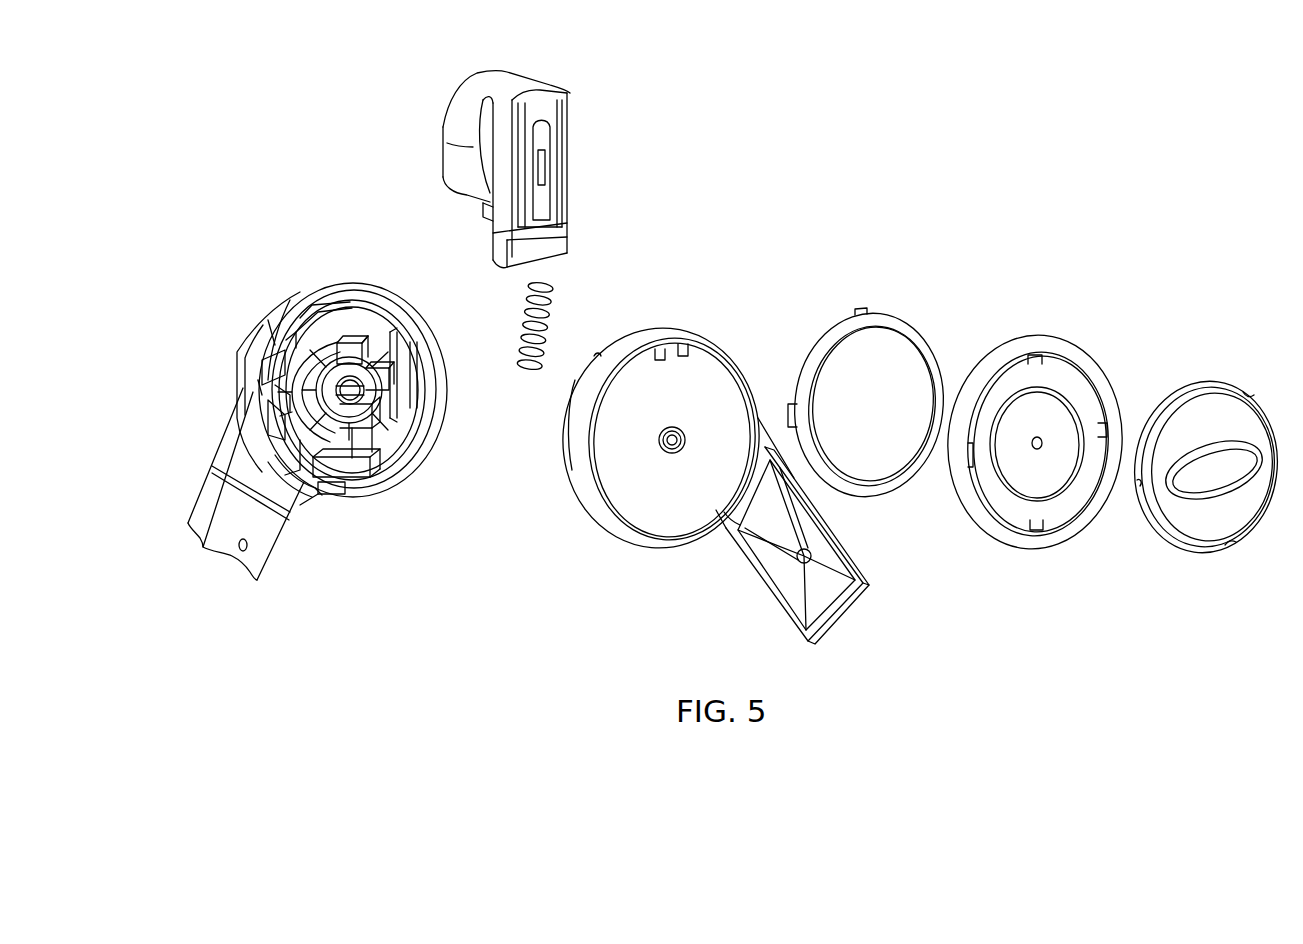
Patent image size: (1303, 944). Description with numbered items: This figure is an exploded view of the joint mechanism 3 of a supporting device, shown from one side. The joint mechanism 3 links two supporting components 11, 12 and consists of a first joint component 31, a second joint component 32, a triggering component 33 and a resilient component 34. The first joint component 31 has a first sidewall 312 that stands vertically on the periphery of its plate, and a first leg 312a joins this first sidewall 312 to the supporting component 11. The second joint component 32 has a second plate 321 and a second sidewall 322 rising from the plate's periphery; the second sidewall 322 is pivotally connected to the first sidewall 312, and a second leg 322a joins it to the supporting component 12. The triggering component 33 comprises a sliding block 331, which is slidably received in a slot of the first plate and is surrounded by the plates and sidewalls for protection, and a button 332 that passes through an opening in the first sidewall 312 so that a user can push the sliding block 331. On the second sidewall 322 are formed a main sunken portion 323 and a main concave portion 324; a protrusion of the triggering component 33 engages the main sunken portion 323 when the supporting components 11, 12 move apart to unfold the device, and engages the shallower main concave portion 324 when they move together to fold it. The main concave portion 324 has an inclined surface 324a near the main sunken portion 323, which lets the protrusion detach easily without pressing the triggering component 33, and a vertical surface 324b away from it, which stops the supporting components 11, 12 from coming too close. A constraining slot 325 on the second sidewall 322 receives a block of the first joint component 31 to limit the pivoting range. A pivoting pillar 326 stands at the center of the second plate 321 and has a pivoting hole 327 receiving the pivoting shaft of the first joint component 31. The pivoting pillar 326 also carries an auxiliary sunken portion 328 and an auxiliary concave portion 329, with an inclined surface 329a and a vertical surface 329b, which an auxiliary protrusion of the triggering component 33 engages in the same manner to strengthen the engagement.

The joint mechanism 3 is at (178, 58).
The supporting component 11 is at (835, 594).
The supporting component 12 is at (225, 548).
The first joint component 31 is at (943, 310).
The second joint component 32 is at (218, 325).
The triggering component 33 is at (477, 72).
The resilient component 34 is at (547, 322).
The first sidewall 312 is at (648, 340).
The first leg 312a is at (736, 500).
The second plate 321 is at (265, 405).
The second sidewall 322 is at (290, 313).
The second leg 322a is at (230, 457).
The main sunken portion 323 is at (355, 473).
The main concave portion 324 is at (308, 467).
The inclined surface 324a is at (330, 500).
The vertical surface 324b is at (273, 438).
The constraining slot 325 is at (312, 318).
The pivoting pillar 326 is at (308, 385).
The pivoting hole 327 is at (363, 412).
The auxiliary sunken portion 328 is at (352, 350).
The auxiliary concave portion 329 is at (382, 362).
The inclined surface 329a is at (375, 363).
The vertical surface 329b is at (388, 370).
The sliding block 331 is at (462, 152).
The button 332 is at (552, 247).